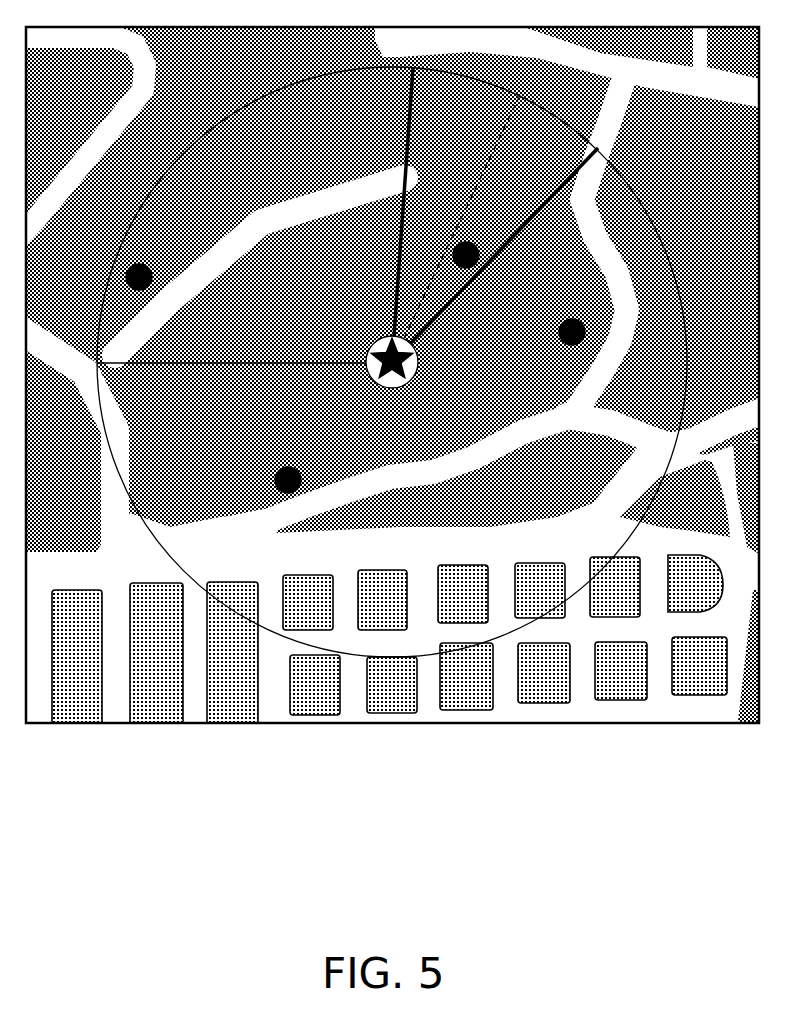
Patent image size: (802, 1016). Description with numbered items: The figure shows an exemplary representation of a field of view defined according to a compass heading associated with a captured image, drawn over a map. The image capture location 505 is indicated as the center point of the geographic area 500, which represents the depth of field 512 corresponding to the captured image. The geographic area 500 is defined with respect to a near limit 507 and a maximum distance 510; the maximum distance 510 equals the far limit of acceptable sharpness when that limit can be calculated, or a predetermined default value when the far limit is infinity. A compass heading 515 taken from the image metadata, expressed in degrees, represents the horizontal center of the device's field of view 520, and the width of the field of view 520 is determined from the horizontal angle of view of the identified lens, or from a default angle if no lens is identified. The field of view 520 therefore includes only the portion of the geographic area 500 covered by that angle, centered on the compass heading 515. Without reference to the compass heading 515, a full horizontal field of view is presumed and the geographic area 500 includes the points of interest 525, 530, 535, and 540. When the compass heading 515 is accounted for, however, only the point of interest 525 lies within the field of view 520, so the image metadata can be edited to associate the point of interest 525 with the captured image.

The geographic area 500 is at (660, 268).
The image capture location 505 is at (410, 378).
The near limit 507 is at (368, 348).
The maximum distance 510 is at (243, 107).
The depth of field 512 is at (207, 366).
The compass heading 515 is at (490, 120).
The field of view 520 is at (403, 132).
The point of interest 525 is at (470, 240).
The point of interest 530 is at (562, 320).
The point of interest 535 is at (150, 268).
The point of interest 540 is at (300, 470).